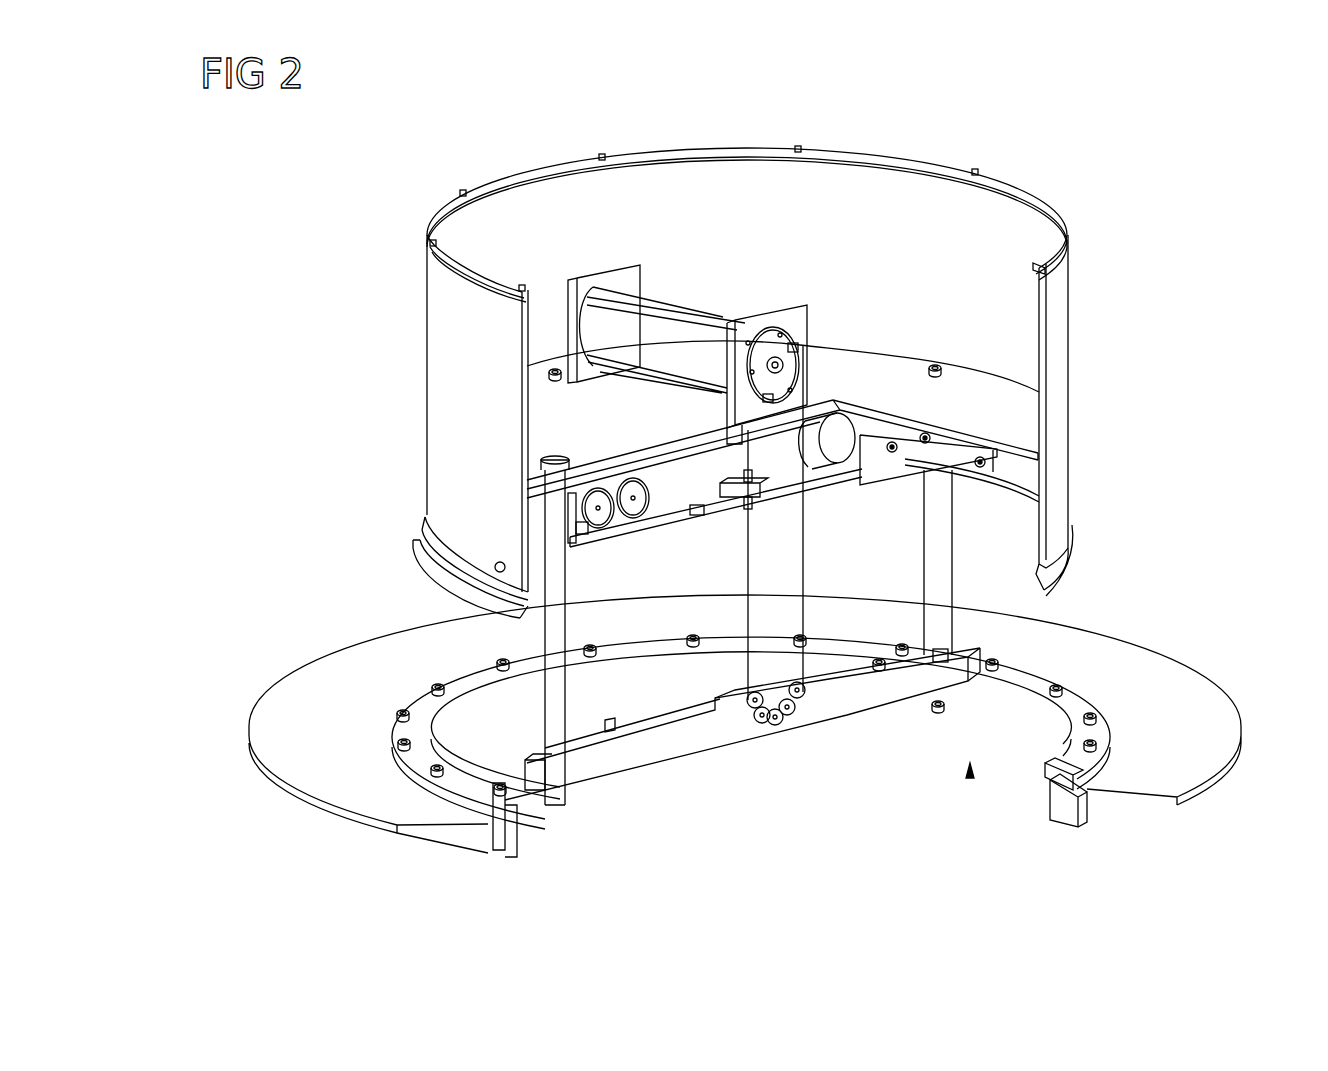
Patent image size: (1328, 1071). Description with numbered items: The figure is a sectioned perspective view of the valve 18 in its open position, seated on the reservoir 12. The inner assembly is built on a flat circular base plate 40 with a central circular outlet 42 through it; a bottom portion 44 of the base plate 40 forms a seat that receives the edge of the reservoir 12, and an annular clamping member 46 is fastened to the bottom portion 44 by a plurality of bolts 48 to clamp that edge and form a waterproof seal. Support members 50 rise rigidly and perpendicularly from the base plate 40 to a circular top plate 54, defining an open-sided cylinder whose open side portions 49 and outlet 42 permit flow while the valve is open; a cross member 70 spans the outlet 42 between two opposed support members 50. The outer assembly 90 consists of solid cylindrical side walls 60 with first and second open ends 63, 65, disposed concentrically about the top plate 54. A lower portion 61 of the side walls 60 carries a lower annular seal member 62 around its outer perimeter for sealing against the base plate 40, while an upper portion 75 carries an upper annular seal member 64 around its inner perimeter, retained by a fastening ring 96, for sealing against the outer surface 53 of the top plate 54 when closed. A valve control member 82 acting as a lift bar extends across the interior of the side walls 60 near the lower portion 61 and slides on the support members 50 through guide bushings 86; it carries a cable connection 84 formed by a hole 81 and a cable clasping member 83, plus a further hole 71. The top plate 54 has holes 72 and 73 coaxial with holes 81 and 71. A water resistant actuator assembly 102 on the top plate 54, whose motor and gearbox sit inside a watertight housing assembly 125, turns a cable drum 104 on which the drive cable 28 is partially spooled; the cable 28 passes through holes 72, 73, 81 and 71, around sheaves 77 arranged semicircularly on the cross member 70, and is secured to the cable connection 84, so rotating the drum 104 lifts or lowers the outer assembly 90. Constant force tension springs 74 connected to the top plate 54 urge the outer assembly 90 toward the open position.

The reservoir 12 is at (1197, 712).
The valve 18 is at (1220, 364).
The drive cable 28 is at (800, 568).
The base plate 40 is at (1070, 705).
The central circular outlet 42 is at (970, 799).
The bottom portion 44 is at (1048, 793).
The annular clamping member 46 is at (1075, 825).
The bolts 48 is at (408, 722).
The open side portions 49 is at (1099, 608).
The support members 50 is at (578, 605).
The outer surface 53 is at (1020, 375).
The top plate 54 is at (857, 372).
The solid side walls 60 is at (1062, 378).
The lower portion 61 is at (1102, 534).
The lower annular seal member 62 is at (415, 557).
The first open end 63 is at (955, 108).
The upper annular seal member 64 is at (1030, 218).
The second open end 65 is at (1012, 524).
The cross member 70 is at (655, 745).
The hole 71 is at (812, 485).
The hole 72 is at (727, 409).
The hole 73 is at (812, 410).
The constant force tension springs 74 is at (635, 495).
The upper portion 75 is at (1073, 248).
The sheaves 77 is at (775, 725).
The hole 81 is at (755, 500).
The valve control member 82 is at (690, 515).
The cable clasping member 83 is at (757, 480).
The cable connection 84 is at (720, 488).
The guide bushings 86 is at (585, 530).
The outer assembly 90 is at (1118, 283).
The fastening ring 96 is at (1062, 207).
The actuator assembly 102 is at (717, 297).
The cable drum 104 is at (810, 345).
The watertight housing assembly 125 is at (678, 305).